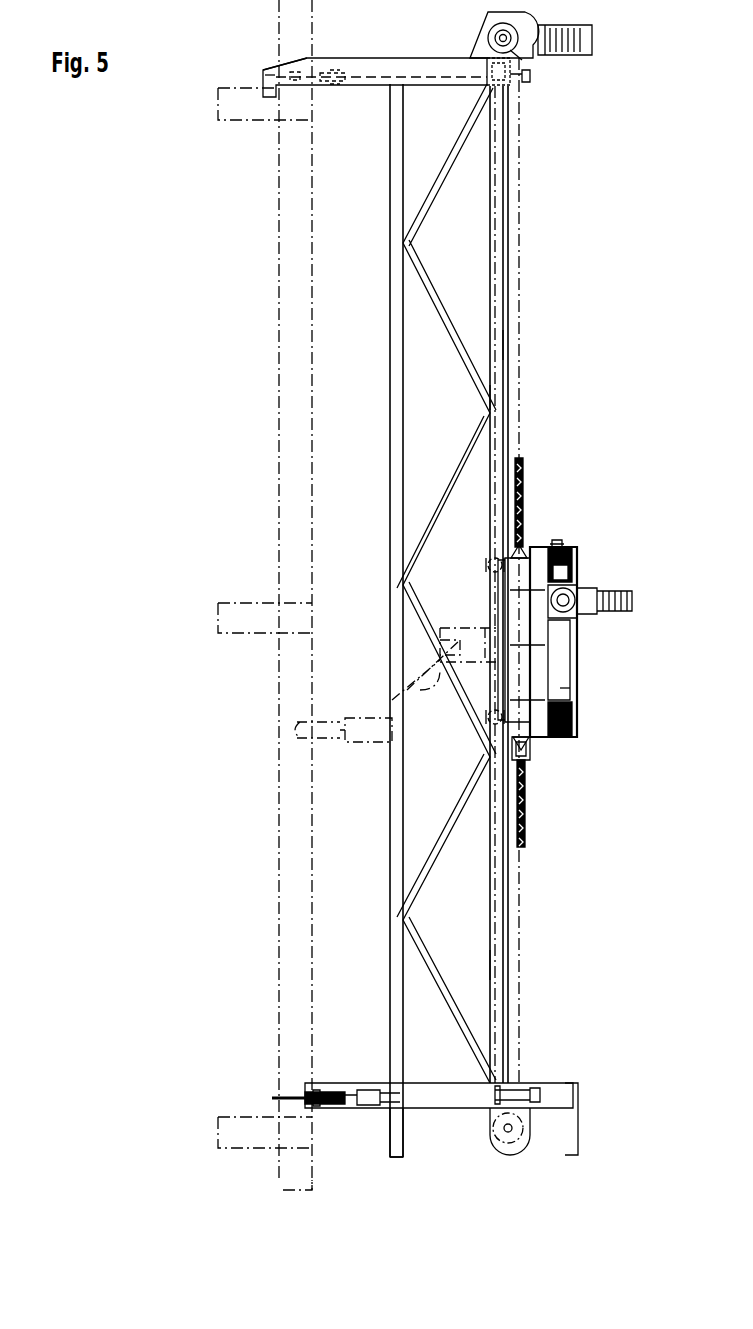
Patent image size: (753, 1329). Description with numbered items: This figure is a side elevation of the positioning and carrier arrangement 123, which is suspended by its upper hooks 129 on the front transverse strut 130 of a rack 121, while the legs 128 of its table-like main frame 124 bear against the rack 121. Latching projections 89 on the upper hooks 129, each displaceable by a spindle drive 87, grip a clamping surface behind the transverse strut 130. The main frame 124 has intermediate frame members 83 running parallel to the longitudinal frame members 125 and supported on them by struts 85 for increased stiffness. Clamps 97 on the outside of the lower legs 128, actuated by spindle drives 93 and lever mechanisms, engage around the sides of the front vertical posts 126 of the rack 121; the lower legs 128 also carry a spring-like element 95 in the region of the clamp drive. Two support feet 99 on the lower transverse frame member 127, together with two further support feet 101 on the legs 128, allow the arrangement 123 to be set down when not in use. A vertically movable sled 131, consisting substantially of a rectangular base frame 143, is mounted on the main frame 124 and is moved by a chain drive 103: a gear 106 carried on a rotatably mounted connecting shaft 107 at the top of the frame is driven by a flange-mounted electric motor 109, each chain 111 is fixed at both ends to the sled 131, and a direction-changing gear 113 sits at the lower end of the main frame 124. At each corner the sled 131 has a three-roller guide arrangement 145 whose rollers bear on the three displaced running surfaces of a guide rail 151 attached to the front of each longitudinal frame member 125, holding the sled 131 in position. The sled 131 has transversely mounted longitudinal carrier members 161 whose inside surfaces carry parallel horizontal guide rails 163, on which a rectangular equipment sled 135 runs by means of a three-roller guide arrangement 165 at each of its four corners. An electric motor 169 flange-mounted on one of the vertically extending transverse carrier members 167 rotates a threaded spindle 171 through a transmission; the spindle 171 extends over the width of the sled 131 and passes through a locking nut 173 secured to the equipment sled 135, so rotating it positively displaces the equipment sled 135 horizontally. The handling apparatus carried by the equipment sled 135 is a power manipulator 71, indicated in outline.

The power manipulator 71 is at (352, 742).
The intermediate frame members 83 is at (398, 411).
The struts 85 is at (432, 300).
The spindle drive 87 is at (373, 72).
The latching projections 89 is at (268, 75).
The spindle drives 93 is at (346, 1090).
The spring 95 is at (312, 1090).
The clamps 97 is at (282, 1097).
The support feet 99 is at (578, 1140).
The support feet 101 is at (404, 1148).
The chain drive 103 is at (521, 267).
The gear 106 is at (490, 34).
The connecting shaft 107 is at (506, 42).
The electric motor 109 is at (590, 34).
The chains 111 is at (523, 466).
The direction-changing gear 113 is at (508, 1143).
The rack 121 is at (266, 262).
The positioning and carrier arrangement 123 is at (528, 186).
The table-like main frame 124 is at (504, 344).
The longitudinal frame members 125 is at (496, 396).
The front vertical posts 126 is at (283, 376).
The lower transverse frame member 127 is at (512, 1086).
The legs 128 is at (340, 1108).
The upper hooks 129 is at (268, 66).
The front transverse strut 130 is at (288, 118).
The vertically movable sled 131 is at (594, 647).
The equipment sled 135 is at (547, 655).
The rectangular base frame 143 is at (564, 690).
The three-roller guide arrangement 145 is at (489, 566).
The guide rail 151 is at (508, 966).
The longitudinal carrier members 161 is at (566, 548).
The guide rails 163 is at (570, 566).
The three-roller guide arrangement 165 is at (557, 542).
The transverse carrier members 167 is at (571, 637).
The electric motor 169 is at (633, 600).
The threaded spindle 171 is at (576, 600).
The locking nut 173 is at (506, 592).